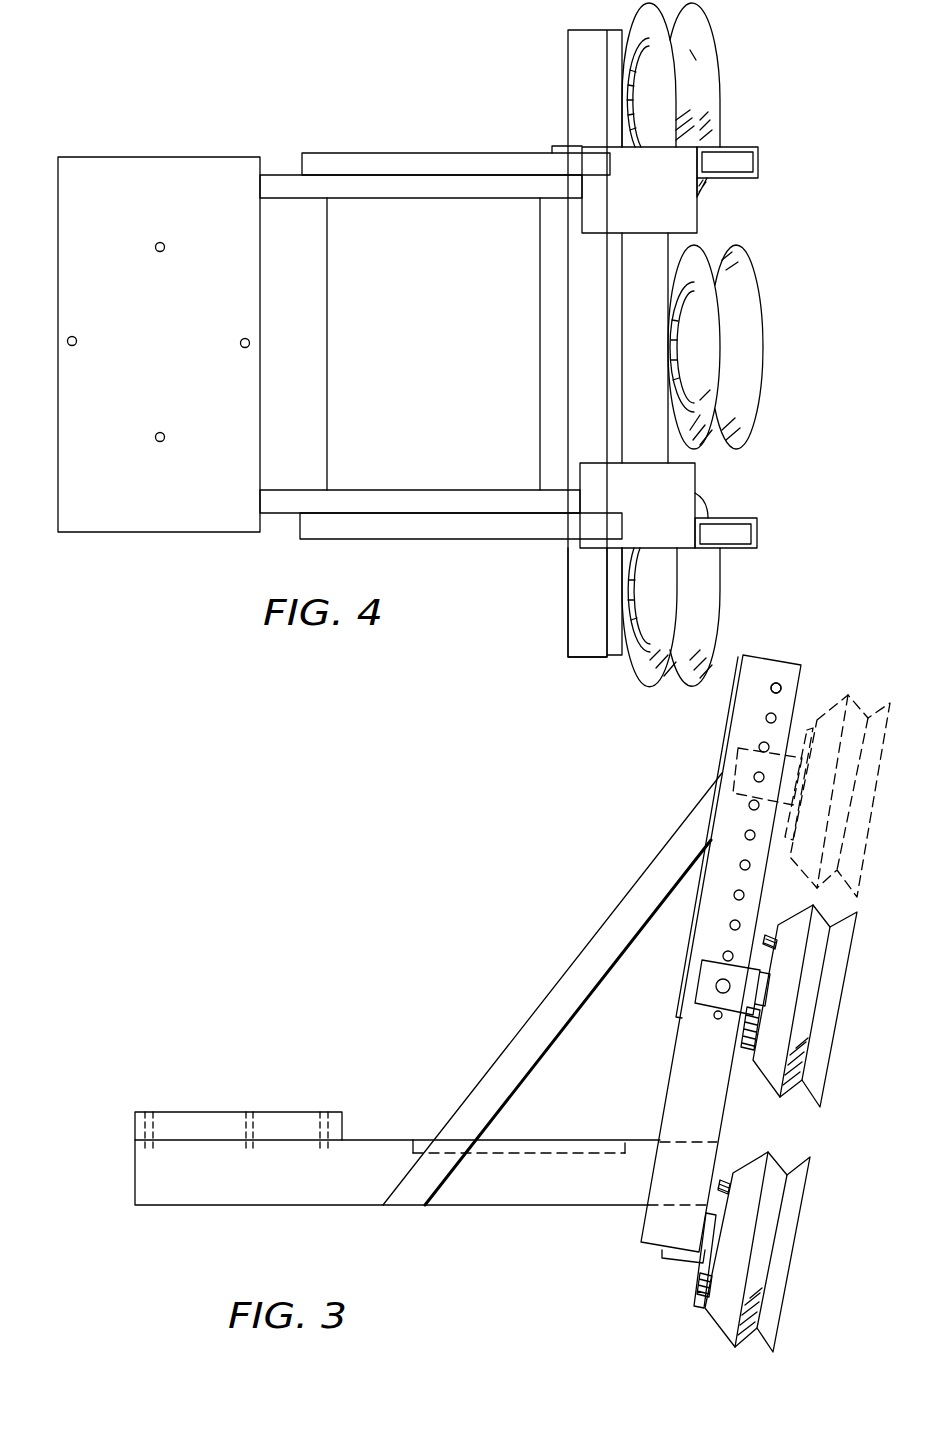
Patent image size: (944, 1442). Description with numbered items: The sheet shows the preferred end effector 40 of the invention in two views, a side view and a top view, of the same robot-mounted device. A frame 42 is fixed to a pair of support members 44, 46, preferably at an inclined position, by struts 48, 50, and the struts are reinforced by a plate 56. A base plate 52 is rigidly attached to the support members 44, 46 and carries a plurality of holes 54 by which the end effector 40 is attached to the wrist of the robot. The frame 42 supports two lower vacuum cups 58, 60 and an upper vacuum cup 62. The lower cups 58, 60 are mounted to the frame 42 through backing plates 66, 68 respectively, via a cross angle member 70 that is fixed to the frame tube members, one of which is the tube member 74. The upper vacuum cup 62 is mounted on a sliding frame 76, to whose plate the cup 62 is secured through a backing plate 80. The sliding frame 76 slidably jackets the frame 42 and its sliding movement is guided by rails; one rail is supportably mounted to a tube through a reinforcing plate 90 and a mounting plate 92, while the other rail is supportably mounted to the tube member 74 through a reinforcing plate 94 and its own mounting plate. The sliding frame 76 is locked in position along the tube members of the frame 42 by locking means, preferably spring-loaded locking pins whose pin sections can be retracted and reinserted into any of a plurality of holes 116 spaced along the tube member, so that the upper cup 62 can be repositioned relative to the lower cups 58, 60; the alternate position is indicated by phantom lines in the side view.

In FIG. 4, the end effector 40 is at (447, 86).
In FIG. 3, the frame 42 is at (570, 843).
In FIG. 4, the support member 44 is at (280, 515).
In FIG. 3, the support member 44 is at (490, 1207).
In FIG. 4, the support member 46 is at (282, 175).
In FIG. 4, the strut 48 is at (355, 540).
In FIG. 3, the strut 48 is at (555, 985).
In FIG. 4, the strut 50 is at (420, 153).
In FIG. 4, the base plate 52 is at (170, 157).
In FIG. 3, the base plate 52 is at (200, 1112).
In FIG. 4, the holes 54 is at (70, 336).
In FIG. 4, the plate 56 is at (492, 210).
In FIG. 3, the plate 56 is at (547, 1140).
In FIG. 4, the lower vacuum cup 58 is at (717, 570).
In FIG. 3, the lower vacuum cup 58 is at (810, 1175).
In FIG. 4, the lower vacuum cup 60 is at (716, 35).
In FIG. 4, the upper vacuum cup 62 is at (753, 268).
In FIG. 3, the upper vacuum cup 62 is at (842, 988).
In FIG. 4, the backing plate 66 is at (637, 593).
In FIG. 4, the backing plate 68 is at (638, 83).
In FIG. 4, the cross angle member 70 is at (567, 578).
In FIG. 3, the cross angle member 70 is at (678, 1262).
In FIG. 4, the frame tube member 74 is at (745, 147).
In FIG. 4, the sliding frame 76 is at (733, 550).
In FIG. 3, the sliding frame 76 is at (700, 980).
In FIG. 4, the backing plate 80 is at (678, 322).
In FIG. 3, the reinforcing plate 90 is at (738, 755).
In FIG. 4, the mounting plate 92 is at (697, 472).
In FIG. 4, the reinforcing plate 94 is at (697, 207).
In FIG. 3, the holes 116 is at (772, 691).